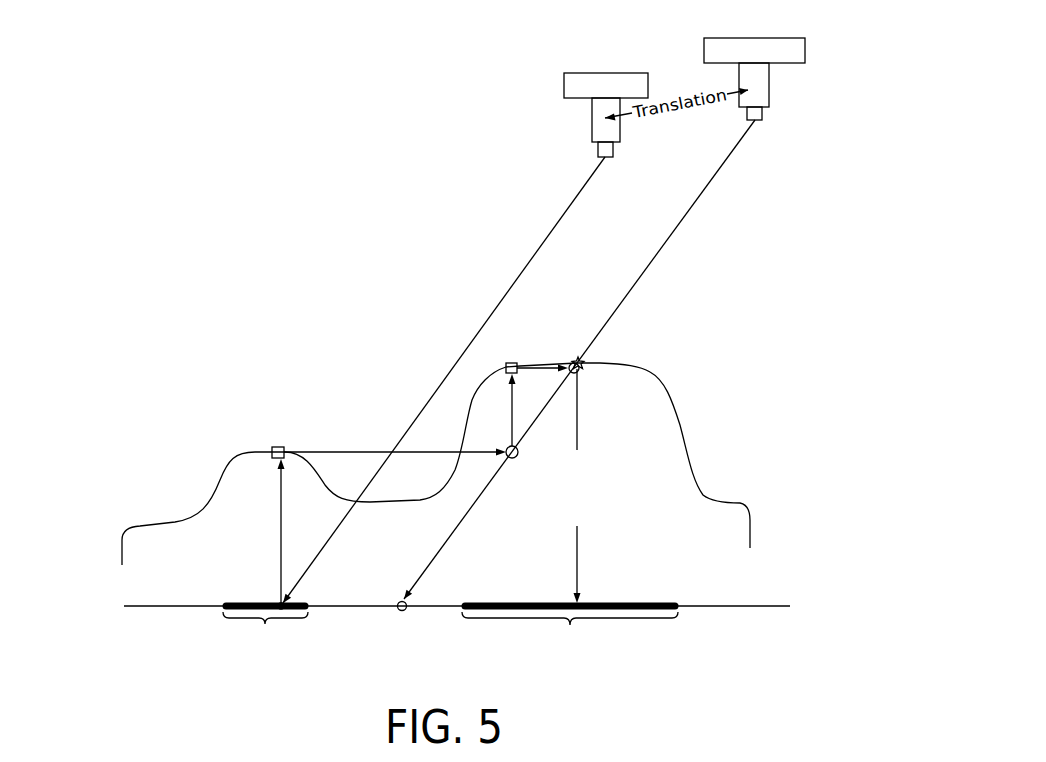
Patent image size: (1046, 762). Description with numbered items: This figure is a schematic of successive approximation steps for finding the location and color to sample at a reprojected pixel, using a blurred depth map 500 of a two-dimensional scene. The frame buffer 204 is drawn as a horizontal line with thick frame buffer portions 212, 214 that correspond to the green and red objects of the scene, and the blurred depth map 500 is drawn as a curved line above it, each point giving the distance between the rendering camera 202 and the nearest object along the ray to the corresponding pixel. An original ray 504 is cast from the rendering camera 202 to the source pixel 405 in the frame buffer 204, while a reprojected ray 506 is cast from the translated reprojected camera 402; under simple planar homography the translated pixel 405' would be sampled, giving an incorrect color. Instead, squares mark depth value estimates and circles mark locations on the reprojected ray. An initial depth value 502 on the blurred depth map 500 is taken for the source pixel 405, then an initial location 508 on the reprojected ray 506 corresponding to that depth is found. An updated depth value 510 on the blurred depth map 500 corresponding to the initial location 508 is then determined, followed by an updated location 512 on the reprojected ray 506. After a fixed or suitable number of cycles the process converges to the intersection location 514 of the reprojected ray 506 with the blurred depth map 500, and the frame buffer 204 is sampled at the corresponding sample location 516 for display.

The rendering camera 202 is at (620, 130).
The reprojected camera 402 is at (769, 88).
The frame buffer 204 is at (143, 606).
The frame buffer portion 212 is at (265, 629).
The frame buffer portion 214 is at (570, 630).
The source pixel 405 is at (314, 629).
The translated pixel 405' is at (435, 631).
The blurred depth map 500 is at (140, 530).
The initial depth value 502 is at (278, 446).
The original ray 504 is at (527, 265).
The reprojected ray 506 is at (643, 272).
The initial location 508 is at (514, 458).
The updated depth value 510 is at (511, 362).
The updated location 512 is at (580, 371).
The intersection location 514 is at (575, 358).
The sample location 516 is at (590, 597).